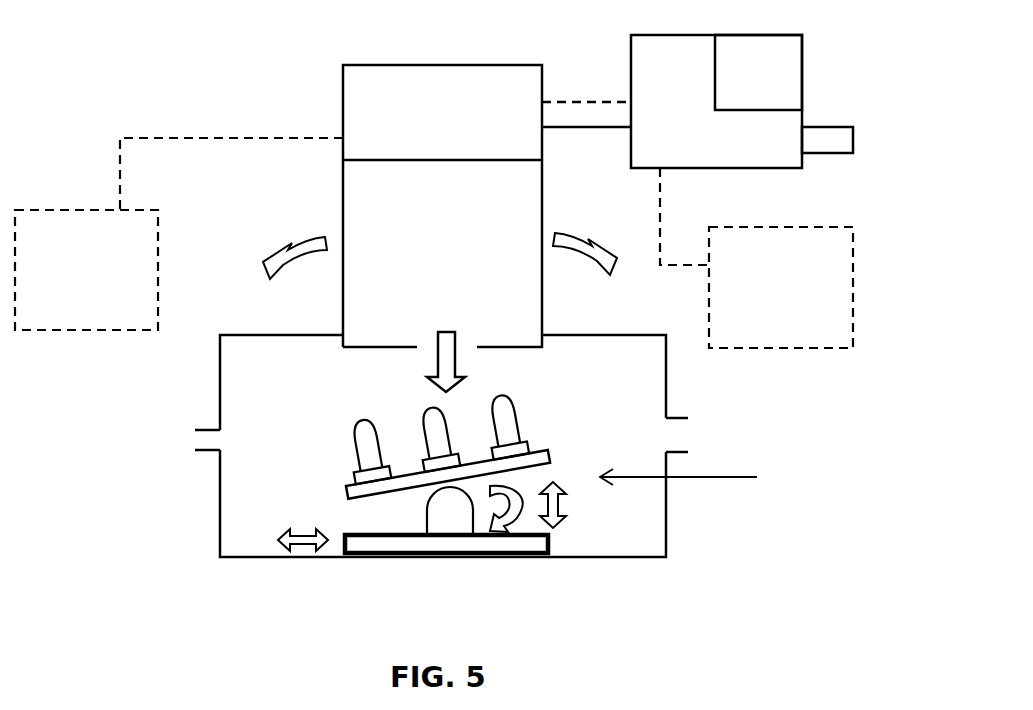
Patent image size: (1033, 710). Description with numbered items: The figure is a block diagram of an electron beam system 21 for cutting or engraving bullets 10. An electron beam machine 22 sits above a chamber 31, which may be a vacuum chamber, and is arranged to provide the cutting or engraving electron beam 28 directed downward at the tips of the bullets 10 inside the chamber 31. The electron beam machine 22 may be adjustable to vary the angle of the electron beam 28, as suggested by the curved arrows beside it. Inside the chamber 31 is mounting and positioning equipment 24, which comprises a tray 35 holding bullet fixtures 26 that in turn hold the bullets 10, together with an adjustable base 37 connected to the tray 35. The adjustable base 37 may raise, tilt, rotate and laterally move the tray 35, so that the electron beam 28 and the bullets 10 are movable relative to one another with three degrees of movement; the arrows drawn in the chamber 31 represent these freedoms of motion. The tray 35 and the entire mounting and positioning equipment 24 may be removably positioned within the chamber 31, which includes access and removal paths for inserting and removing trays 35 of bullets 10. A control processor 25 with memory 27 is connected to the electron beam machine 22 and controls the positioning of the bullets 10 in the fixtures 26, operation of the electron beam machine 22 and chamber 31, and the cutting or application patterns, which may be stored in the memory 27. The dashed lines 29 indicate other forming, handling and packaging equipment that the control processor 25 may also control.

The electron beam system 21 is at (240, 95).
The electron beam machine 22 is at (440, 206).
The control processor 25 is at (697, 101).
The memory 27 is at (758, 72).
The dashed lines 29 is at (434, 243).
The chamber 31 is at (215, 502).
The mounting and positioning equipment 24 is at (698, 479).
The electron beam 28 is at (405, 376).
The tray 35 is at (548, 455).
The bullets 10 is at (357, 443).
The bullet fixtures 26 is at (546, 444).
The adjustable base 37 is at (498, 537).